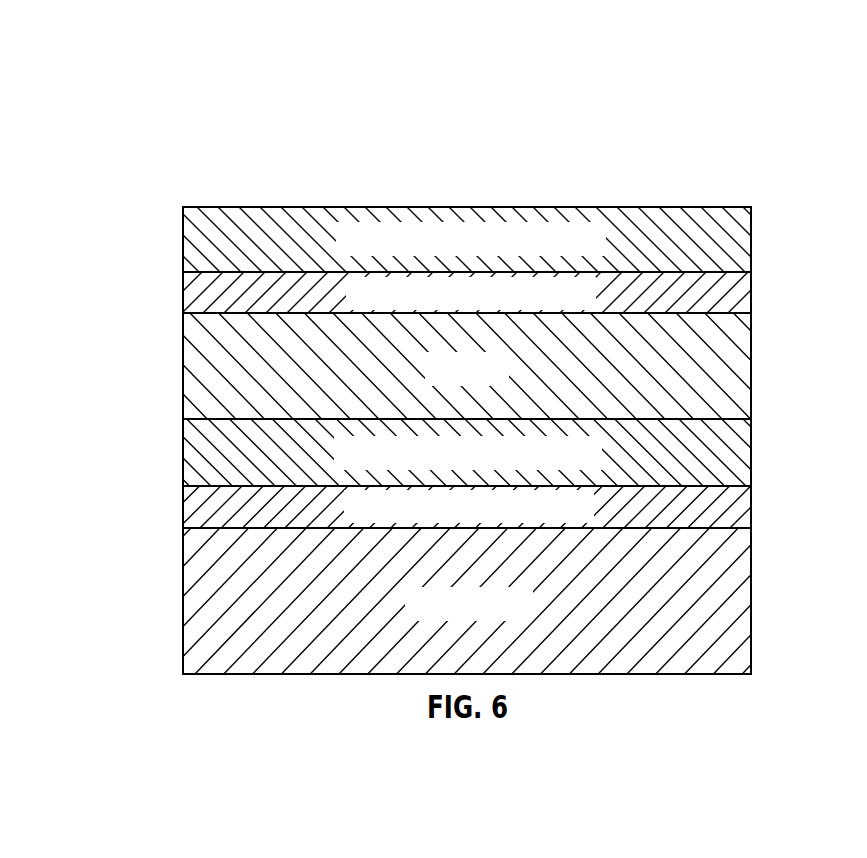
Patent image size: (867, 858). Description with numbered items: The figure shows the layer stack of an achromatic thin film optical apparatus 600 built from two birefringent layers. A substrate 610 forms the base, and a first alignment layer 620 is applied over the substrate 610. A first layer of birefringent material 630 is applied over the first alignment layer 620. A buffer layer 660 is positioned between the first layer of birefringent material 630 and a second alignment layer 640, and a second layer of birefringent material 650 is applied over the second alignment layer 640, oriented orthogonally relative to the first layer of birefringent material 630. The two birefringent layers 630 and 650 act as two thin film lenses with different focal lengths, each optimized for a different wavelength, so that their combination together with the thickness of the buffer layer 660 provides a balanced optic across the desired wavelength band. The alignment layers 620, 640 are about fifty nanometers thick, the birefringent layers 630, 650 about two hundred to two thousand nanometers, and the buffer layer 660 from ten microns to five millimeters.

The thin film optical apparatus 600 is at (110, 61).
The substrate 610 is at (193, 610).
The first alignment layer 620 is at (200, 512).
The first layer of birefringent material 630 is at (198, 470).
The buffer layer 660 is at (193, 380).
The second alignment layer 640 is at (210, 300).
The second layer of birefringent material 650 is at (200, 238).